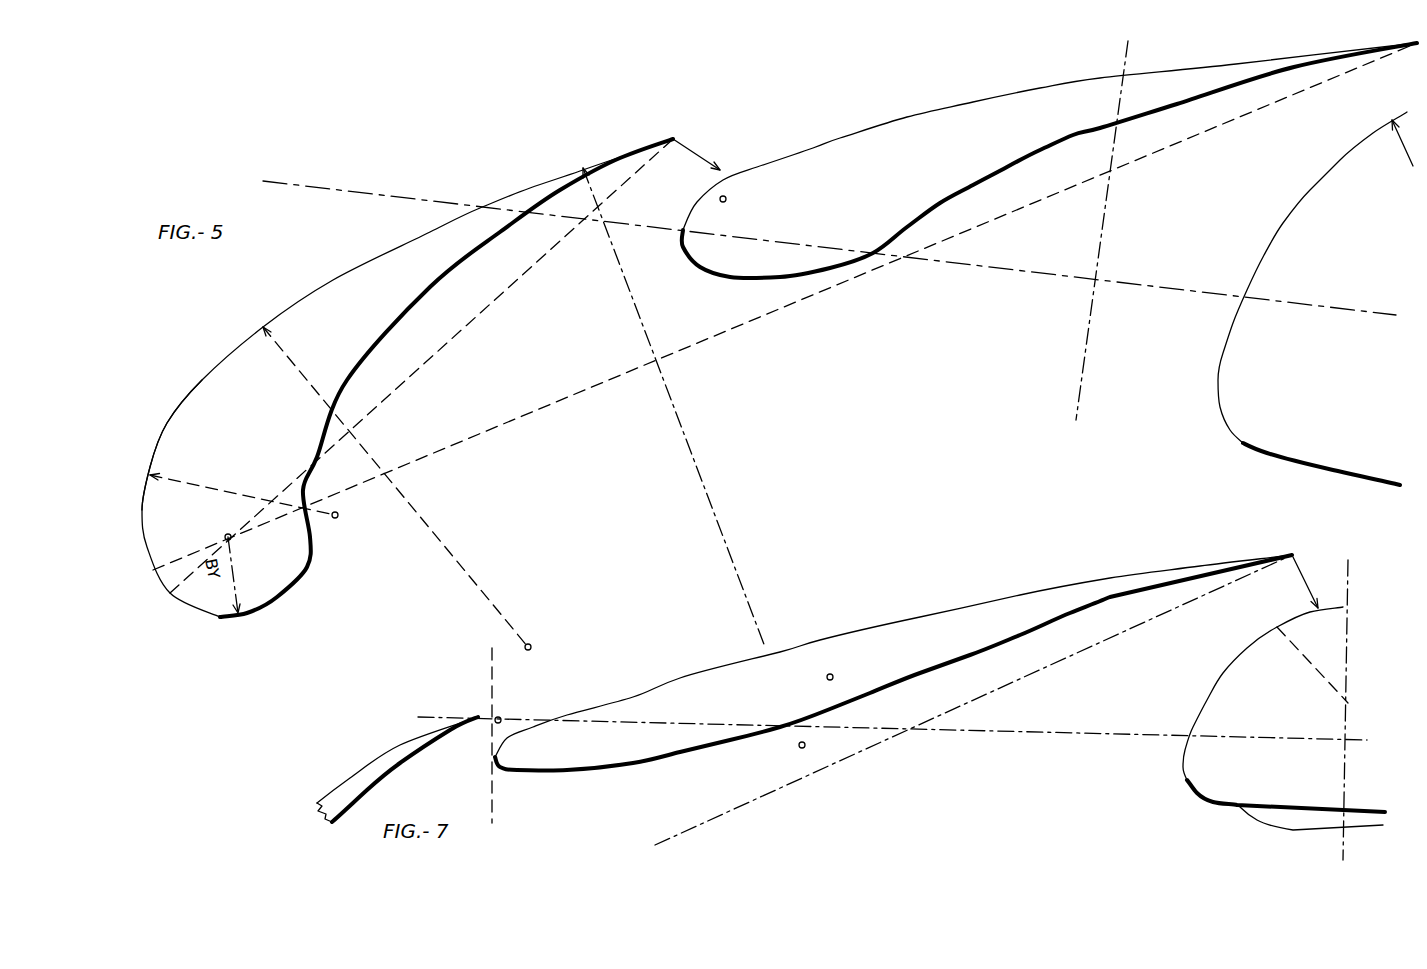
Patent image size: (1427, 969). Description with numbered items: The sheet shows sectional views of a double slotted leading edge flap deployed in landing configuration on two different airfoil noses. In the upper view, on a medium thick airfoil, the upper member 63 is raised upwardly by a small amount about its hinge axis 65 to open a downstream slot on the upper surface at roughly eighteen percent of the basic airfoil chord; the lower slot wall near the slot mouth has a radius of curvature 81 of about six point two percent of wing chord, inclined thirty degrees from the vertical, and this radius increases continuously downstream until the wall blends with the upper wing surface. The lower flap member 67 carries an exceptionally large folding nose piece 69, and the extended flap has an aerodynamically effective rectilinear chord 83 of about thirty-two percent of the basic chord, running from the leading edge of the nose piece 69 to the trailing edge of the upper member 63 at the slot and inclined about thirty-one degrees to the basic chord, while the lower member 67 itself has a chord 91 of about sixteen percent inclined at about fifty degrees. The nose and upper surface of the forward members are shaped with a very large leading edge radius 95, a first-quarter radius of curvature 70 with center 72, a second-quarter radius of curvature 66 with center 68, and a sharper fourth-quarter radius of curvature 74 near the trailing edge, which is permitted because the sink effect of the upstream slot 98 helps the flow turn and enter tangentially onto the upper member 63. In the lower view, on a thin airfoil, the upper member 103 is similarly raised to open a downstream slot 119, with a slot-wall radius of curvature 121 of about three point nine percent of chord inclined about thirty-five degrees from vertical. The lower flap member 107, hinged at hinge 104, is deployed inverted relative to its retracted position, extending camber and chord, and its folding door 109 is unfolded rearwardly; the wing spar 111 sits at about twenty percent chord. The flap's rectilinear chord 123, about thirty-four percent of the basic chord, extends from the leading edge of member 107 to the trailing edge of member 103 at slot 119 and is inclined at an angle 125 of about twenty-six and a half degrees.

In FIG. 5, the upper member 63 is at (982, 100).
In FIG. 5, the hinge axis 65 is at (723, 196).
In FIG. 5, the radius of curvature 66 is at (367, 451).
In FIG. 5, the lower flap member 67 is at (336, 281).
In FIG. 5, the center of radius of curvature 68 is at (531, 647).
In FIG. 5, the folding nose piece 69 is at (200, 381).
In FIG. 5, the radius of curvature 70 is at (178, 480).
In FIG. 5, the center of radius of curvature 72 is at (338, 515).
In FIG. 5, the radius of curvature 74 is at (681, 423).
In FIG. 5, the radius of curvature 81 is at (1412, 160).
In FIG. 5, the aerodynamically effective rectilinear chord 83 is at (500, 421).
In FIG. 5, the chord of lower member 91 is at (484, 308).
In FIG. 5, the leading edge radius 95 is at (240, 593).
In FIG. 5, the upstream slot 98 is at (677, 143).
In FIG. 7, the upper member 103 is at (663, 682).
In FIG. 7, the hinge 104 is at (498, 717).
In FIG. 7, the lower flap member 107 is at (375, 767).
In FIG. 7, the folding door 109 is at (1350, 827).
In FIG. 7, the wing spar 111 is at (1353, 808).
In FIG. 7, the downstream slot 119 is at (1305, 580).
In FIG. 7, the radius of curvature 121 is at (1323, 673).
In FIG. 7, the aerodynamically effective rectilinear chord 123 is at (973, 700).
In FIG. 7, the angle 125 is at (892, 720).